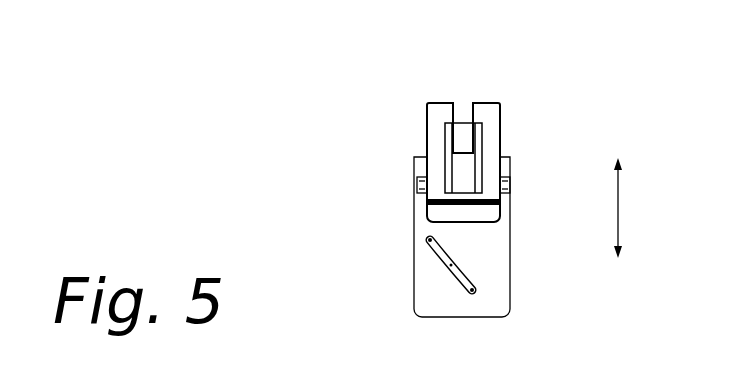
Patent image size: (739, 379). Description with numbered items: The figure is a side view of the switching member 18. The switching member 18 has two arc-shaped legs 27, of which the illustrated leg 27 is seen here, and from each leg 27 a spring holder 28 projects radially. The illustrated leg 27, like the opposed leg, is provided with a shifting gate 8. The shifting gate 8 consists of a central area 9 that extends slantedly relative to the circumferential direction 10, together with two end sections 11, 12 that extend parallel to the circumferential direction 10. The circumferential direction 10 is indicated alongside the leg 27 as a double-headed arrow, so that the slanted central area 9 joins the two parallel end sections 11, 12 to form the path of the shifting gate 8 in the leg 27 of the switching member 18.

The switching member 18 is at (360, 175).
The spring holder 28 is at (437, 165).
The leg 27 is at (500, 257).
The shifting gate 8 is at (448, 268).
The central area 9 is at (452, 263).
The end section 11 is at (428, 240).
The end section 12 is at (500, 292).
The circumferential direction 10 is at (620, 193).